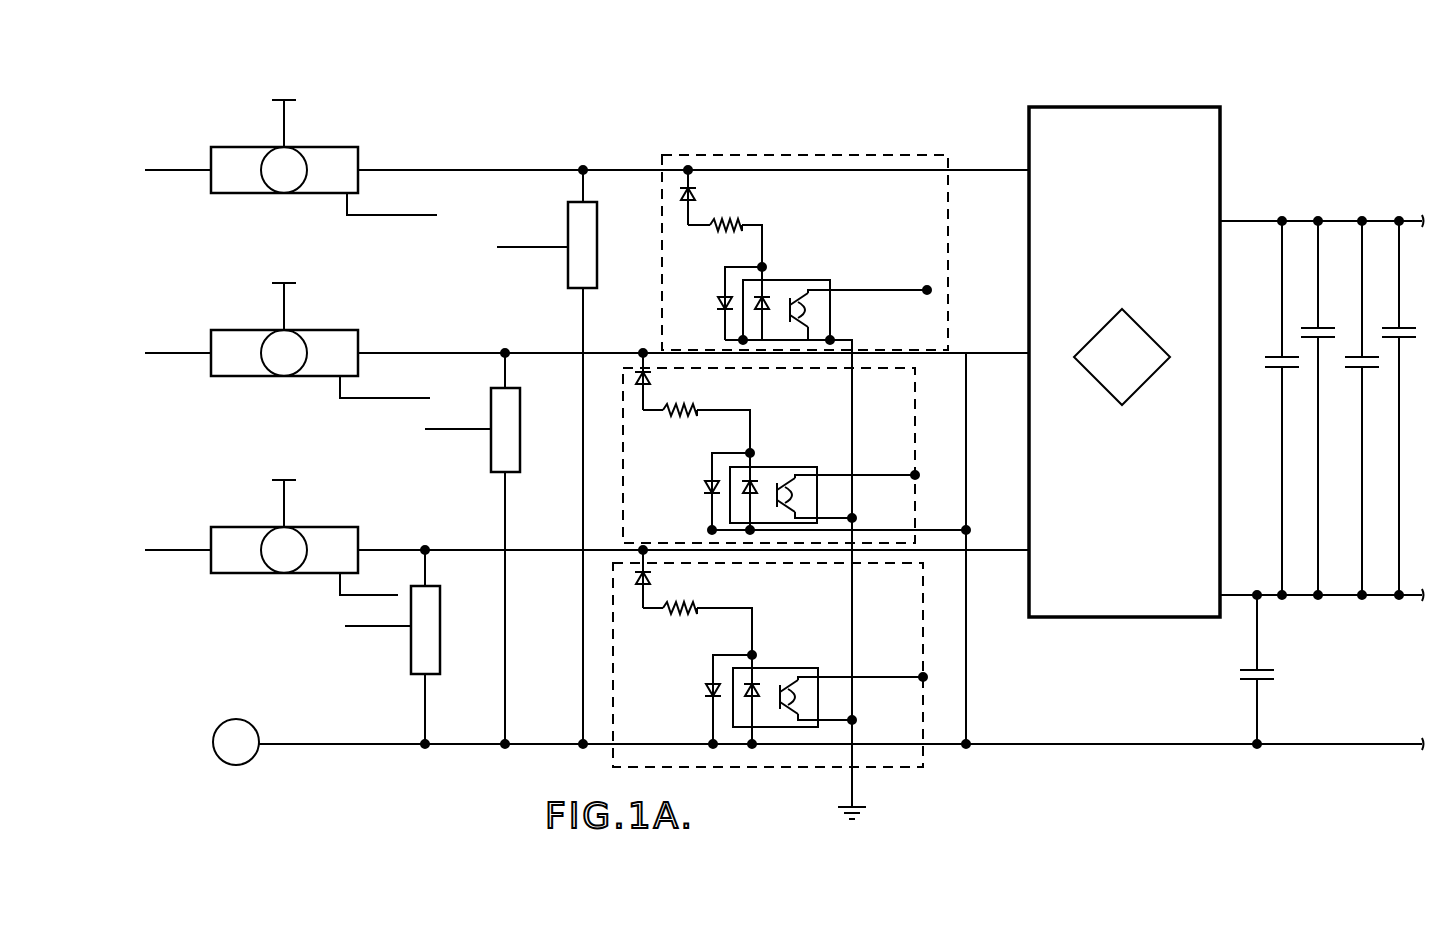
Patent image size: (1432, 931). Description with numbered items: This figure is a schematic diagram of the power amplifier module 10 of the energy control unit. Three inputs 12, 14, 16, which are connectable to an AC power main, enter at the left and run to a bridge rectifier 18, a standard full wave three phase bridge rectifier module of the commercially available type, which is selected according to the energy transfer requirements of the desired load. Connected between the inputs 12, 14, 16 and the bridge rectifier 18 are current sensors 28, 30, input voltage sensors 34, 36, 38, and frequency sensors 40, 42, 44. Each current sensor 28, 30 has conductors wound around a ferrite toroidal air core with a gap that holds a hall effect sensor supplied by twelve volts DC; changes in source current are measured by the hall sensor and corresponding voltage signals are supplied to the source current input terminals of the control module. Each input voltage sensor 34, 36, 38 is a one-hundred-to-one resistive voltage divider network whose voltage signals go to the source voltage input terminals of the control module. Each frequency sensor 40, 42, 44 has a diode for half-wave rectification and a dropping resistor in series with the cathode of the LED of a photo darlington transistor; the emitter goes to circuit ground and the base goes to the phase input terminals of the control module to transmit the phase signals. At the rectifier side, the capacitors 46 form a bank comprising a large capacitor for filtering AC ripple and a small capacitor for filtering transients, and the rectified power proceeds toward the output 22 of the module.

The power amplifier module 10 is at (1342, 120).
The input 12 is at (159, 170).
The input 14 is at (159, 353).
The input 16 is at (159, 550).
The bridge rectifier 18 is at (1105, 107).
The output 22 is at (336, 527).
The current sensor 28 is at (337, 147).
The current sensor 30 is at (333, 330).
The input voltage sensor 34 is at (597, 232).
The input voltage sensor 36 is at (520, 445).
The input voltage sensor 38 is at (441, 645).
The frequency sensor 40 is at (787, 157).
The frequency sensor 42 is at (915, 425).
The frequency sensor 44 is at (923, 630).
The capacitors 46 is at (1288, 352).